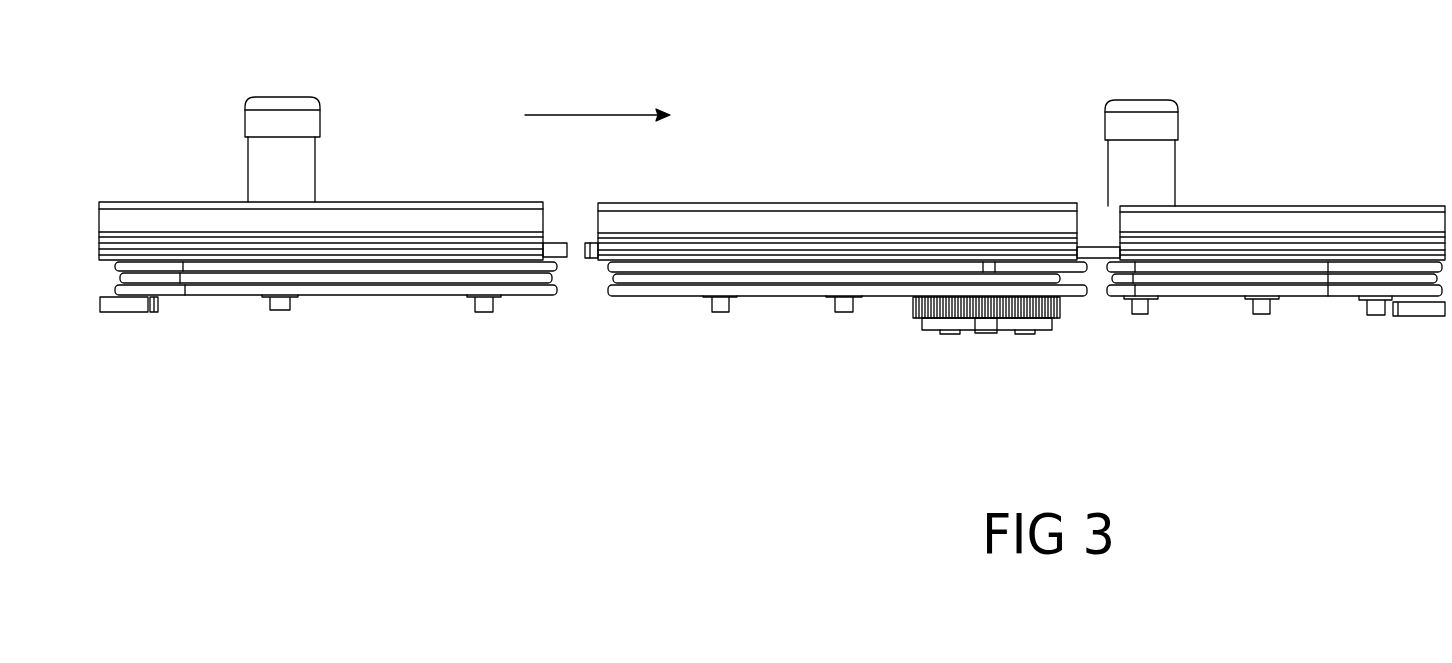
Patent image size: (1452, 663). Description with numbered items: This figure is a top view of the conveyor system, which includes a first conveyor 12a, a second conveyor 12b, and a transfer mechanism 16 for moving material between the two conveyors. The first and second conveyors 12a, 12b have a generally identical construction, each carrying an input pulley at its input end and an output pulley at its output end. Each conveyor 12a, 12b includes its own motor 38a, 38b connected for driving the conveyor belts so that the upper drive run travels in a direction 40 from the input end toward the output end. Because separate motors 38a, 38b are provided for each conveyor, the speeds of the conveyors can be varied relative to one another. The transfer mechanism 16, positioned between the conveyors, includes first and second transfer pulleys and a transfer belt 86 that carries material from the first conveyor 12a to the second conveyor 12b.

The first conveyor 12a is at (378, 313).
The second conveyor 12b is at (1130, 328).
The transfer mechanism 16 is at (887, 310).
The motor 38a is at (278, 115).
The motor 38b is at (1167, 165).
The direction 40 is at (580, 115).
The transfer belt 86 is at (908, 277).